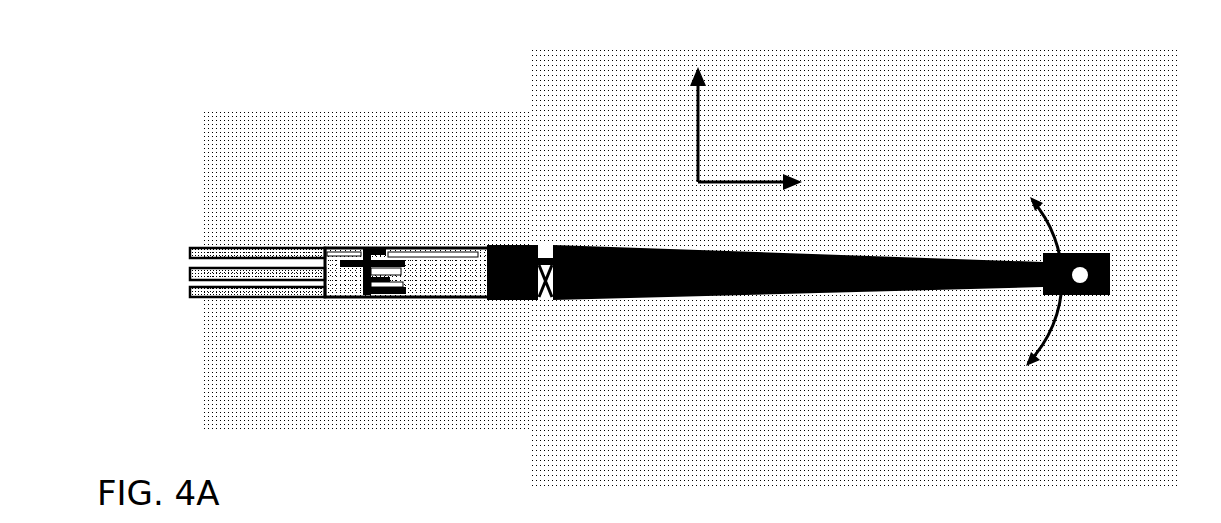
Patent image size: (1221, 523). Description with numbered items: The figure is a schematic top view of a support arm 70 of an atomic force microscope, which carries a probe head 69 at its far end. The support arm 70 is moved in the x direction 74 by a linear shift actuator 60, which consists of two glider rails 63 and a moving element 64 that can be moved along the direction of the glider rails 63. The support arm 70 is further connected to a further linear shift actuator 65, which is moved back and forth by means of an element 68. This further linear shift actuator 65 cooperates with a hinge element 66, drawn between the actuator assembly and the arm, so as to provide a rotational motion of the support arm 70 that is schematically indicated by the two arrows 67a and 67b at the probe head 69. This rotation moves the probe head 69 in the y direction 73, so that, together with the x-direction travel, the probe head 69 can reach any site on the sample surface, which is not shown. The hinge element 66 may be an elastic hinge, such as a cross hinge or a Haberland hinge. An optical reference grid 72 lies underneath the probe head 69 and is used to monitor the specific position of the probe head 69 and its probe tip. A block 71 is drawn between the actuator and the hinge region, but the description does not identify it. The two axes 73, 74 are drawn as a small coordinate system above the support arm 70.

The linear shift actuator 60 is at (324, 271).
The glider rails 63 is at (252, 248).
The moving element 64 is at (217, 232).
The further linear shift actuator 65 is at (432, 250).
The hinge element 66 is at (545, 298).
The arrow 67a is at (1058, 233).
The arrow 67b is at (1057, 333).
The element 68 is at (382, 247).
The probe head 69 is at (1110, 268).
The support arm 70 is at (808, 292).
The coupling block 71 is at (518, 300).
The optical reference grid 72 is at (950, 120).
The y direction 73 is at (697, 115).
The x direction 74 is at (745, 183).